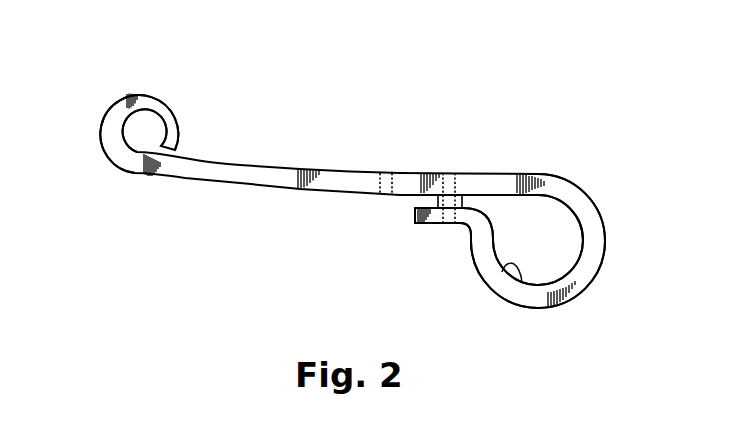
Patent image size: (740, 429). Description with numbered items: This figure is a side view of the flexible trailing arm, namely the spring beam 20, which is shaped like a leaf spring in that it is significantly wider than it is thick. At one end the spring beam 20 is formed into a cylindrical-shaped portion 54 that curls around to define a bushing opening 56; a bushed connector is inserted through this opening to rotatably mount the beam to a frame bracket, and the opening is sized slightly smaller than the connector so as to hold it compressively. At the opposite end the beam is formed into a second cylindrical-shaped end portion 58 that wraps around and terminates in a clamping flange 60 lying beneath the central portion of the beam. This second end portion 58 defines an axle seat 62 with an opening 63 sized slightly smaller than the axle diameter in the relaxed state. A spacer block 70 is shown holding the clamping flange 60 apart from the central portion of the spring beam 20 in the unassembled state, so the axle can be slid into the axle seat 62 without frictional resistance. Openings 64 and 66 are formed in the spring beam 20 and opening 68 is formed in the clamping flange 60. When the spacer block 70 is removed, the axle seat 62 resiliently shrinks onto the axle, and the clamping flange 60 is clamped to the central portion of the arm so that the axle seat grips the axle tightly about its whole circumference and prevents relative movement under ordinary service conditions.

The spring beam 20 is at (356, 163).
The cylindrical-shaped portion 54 is at (107, 104).
The bushing opening 56 is at (133, 141).
The cylindrical-shaped end portion 58 is at (579, 309).
The clamping flange 60 is at (420, 229).
The axle seat 62 is at (522, 283).
The opening 63 is at (528, 253).
The opening 64 is at (391, 172).
The opening 66 is at (450, 172).
The opening 68 is at (452, 226).
The spacer block 70 is at (452, 200).